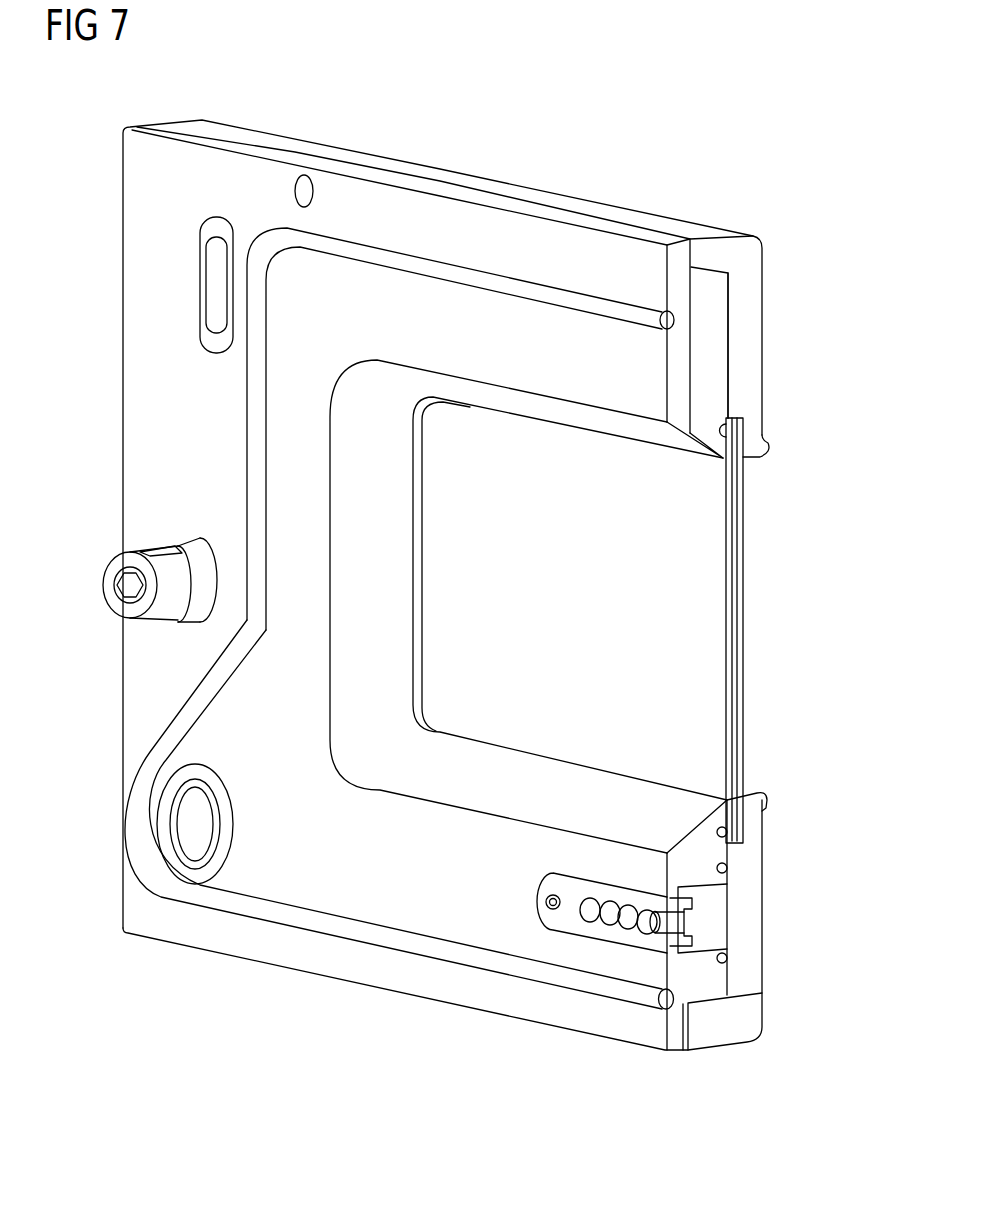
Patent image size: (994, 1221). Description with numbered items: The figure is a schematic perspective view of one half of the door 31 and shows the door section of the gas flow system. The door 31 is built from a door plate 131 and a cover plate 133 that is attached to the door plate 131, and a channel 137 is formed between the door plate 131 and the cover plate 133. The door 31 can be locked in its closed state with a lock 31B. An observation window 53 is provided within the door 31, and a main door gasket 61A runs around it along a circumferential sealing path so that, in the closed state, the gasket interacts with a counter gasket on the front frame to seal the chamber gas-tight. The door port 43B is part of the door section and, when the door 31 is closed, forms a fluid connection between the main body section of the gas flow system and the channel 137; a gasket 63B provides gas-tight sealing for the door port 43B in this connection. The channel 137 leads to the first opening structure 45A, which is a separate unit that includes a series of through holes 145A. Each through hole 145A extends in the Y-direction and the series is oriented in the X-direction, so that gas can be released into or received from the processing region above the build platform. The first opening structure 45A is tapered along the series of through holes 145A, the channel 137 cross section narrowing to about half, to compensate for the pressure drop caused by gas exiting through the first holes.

The door 31 is at (645, 110).
The lock 31B is at (145, 619).
The main door gasket 61A is at (462, 276).
The first opening structure 45A is at (589, 962).
The cover plate 133 is at (750, 283).
The door plate 131 is at (716, 327).
The observation window 53 is at (568, 722).
The door port 43B is at (193, 825).
The gasket 63B is at (190, 875).
The through holes 145A is at (585, 917).
The channel 137 is at (703, 918).